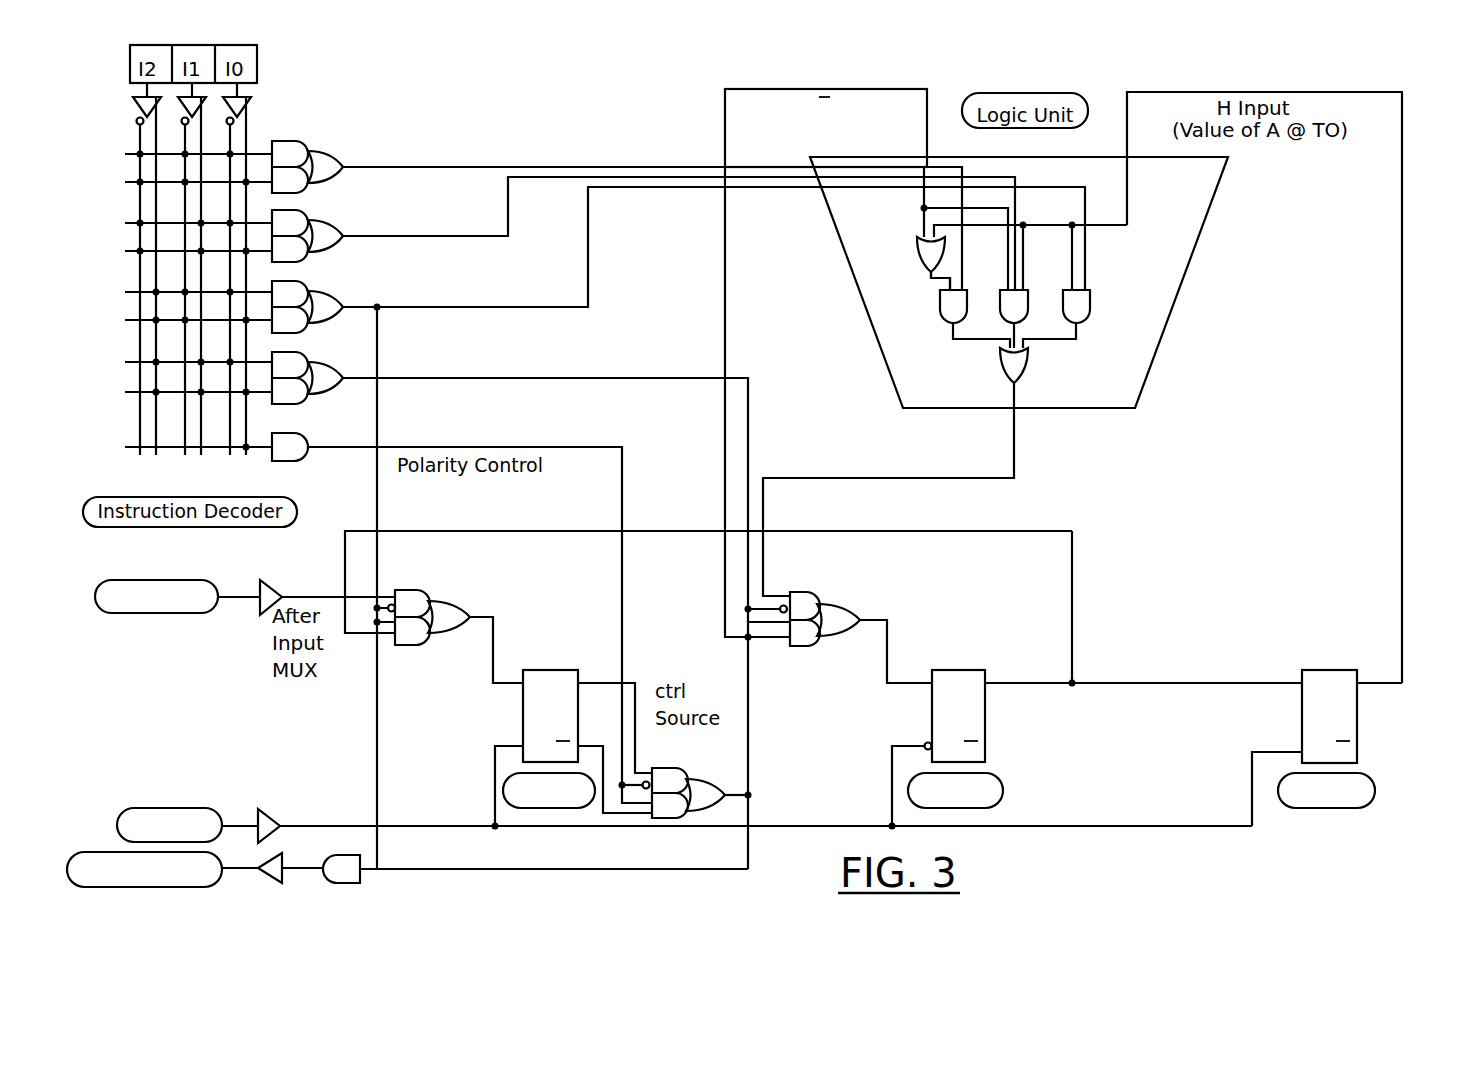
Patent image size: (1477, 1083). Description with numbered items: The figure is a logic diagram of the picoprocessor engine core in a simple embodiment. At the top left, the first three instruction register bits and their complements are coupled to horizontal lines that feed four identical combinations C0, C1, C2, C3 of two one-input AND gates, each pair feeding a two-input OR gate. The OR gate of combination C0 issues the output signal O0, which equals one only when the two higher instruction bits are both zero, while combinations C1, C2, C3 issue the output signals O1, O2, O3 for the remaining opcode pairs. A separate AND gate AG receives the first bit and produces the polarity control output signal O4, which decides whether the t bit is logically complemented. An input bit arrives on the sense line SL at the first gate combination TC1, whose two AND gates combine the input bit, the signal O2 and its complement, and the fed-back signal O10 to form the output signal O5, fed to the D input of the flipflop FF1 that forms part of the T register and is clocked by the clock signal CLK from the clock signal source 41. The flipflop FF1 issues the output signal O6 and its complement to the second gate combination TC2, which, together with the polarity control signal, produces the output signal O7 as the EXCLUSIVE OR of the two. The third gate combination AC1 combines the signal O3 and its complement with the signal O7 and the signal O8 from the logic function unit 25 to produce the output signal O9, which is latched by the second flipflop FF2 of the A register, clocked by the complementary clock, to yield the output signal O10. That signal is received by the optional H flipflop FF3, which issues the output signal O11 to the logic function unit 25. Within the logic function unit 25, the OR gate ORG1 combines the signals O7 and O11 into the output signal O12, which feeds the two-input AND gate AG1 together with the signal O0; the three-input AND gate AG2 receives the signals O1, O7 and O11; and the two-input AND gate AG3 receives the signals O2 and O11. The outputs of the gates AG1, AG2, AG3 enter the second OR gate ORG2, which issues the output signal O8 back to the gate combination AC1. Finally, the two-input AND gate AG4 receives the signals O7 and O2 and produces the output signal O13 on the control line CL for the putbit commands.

The logic function unit 25 is at (1137, 352).
The clock signal source 41 is at (136, 812).
The first combination of two one-input AND gates C0 is at (316, 153).
The second combination of two one-input AND gates C1 is at (316, 223).
The third combination of two one-input AND gates C2 is at (316, 293).
The fourth combination of two one-input AND gates C3 is at (316, 363).
The AND gate AG is at (306, 465).
The output signal O0 is at (418, 167).
The output signal O1 is at (412, 236).
The output signal O2 is at (390, 307).
The output signal O3 is at (700, 378).
The polarity control output signal O4 is at (612, 447).
The output signal O5 is at (491, 617).
The output signal O6 is at (623, 683).
The output signal O7 is at (826, 89).
The output signal O8 is at (1017, 438).
The output signal O9 is at (888, 642).
The output signal O10 is at (1104, 683).
The output signal O11 is at (1403, 637).
The output signal O12 is at (940, 277).
The output signal O13 is at (305, 870).
The two-input OR gate ORG1 is at (918, 260).
The second OR gate ORG2 is at (1012, 372).
The two-input AND gate AG1 is at (943, 310).
The three-input AND gate AG2 is at (1018, 310).
The two-input AND gate AG3 is at (1082, 308).
The two-input AND gate AG4 is at (346, 881).
The first gate combination TC1 is at (436, 592).
The second gate combination TC2 is at (692, 768).
The third gate combination AC1 is at (833, 650).
The D type flipflop FF1 is at (544, 737).
The second flipflop FF2 is at (946, 737).
The H flipflop FF3 is at (1313, 735).
The sense line SL is at (145, 613).
The control line CL is at (165, 887).
The clock signal CLK is at (288, 826).